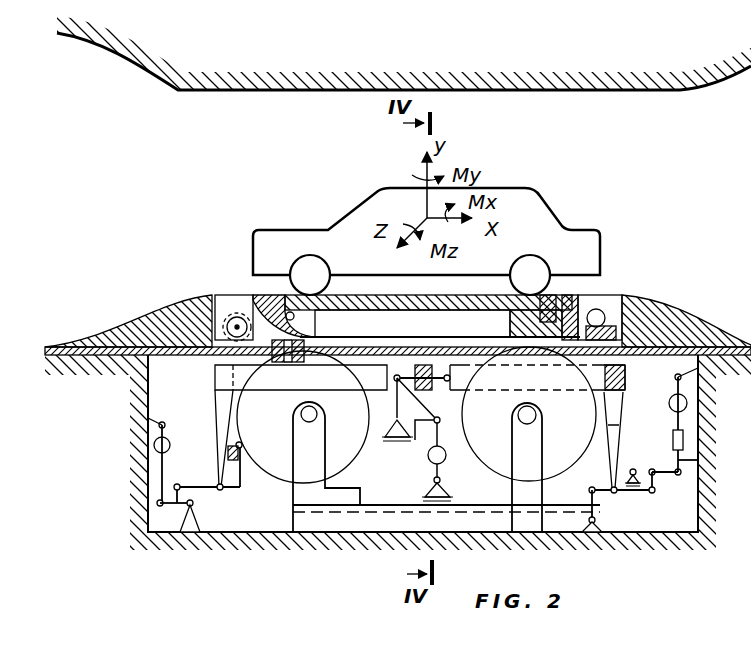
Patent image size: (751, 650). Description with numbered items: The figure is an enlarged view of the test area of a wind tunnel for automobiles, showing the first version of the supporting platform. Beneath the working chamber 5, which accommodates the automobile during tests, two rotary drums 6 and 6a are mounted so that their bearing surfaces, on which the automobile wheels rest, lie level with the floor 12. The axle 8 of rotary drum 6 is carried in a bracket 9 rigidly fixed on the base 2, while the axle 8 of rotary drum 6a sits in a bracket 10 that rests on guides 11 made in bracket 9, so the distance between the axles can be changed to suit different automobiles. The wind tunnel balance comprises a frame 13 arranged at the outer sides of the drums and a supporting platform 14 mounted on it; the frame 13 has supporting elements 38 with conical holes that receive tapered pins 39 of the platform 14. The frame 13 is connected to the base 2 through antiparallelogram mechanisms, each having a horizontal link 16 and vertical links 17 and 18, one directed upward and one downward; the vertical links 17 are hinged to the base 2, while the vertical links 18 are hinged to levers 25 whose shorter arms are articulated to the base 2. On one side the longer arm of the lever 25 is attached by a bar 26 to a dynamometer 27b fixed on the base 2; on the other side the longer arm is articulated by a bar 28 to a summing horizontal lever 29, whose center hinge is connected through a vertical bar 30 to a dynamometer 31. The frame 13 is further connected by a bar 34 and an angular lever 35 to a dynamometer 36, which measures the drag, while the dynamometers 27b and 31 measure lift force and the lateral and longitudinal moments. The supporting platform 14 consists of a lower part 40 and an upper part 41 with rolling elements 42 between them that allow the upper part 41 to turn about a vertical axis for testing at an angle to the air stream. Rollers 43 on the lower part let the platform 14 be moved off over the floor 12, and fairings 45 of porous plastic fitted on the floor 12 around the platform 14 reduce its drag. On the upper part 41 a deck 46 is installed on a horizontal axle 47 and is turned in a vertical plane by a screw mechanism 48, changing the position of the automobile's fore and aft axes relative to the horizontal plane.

The base 2 is at (645, 540).
The working chamber 5 is at (262, 93).
The rotary drum 6 is at (529, 439).
The rotary drum 6a is at (348, 465).
The axle 8 is at (318, 414).
The bracket 9 is at (527, 517).
The bracket 10 is at (296, 506).
The guides 11 is at (380, 512).
The floor 12 is at (128, 343).
The frame 13 is at (216, 378).
The supporting platform 14 is at (233, 292).
The horizontal link 16 is at (202, 485).
The vertical link 17 is at (243, 475).
The vertical link 18 is at (192, 504).
The lever 25 is at (158, 506).
The bar 26 is at (158, 480).
The dynamometer 27b is at (153, 445).
The bar 28 is at (698, 460).
The summing horizontal lever 29 is at (684, 440).
The vertical bar 30 is at (688, 400).
The dynamometer 31 is at (669, 405).
The bar 34 is at (447, 384).
The angular lever 35 is at (400, 438).
The dynamometer 36 is at (446, 458).
The supporting elements 38 is at (290, 366).
The tapered pins 39 is at (264, 298).
The lower part 40 is at (655, 312).
The upper part 41 is at (572, 300).
The rolling elements 42 is at (598, 310).
The rollers 43 is at (218, 300).
The fairings 45 is at (165, 315).
The deck 46 is at (370, 297).
The horizontal axle 47 is at (292, 308).
The screw mechanism 48 is at (548, 298).